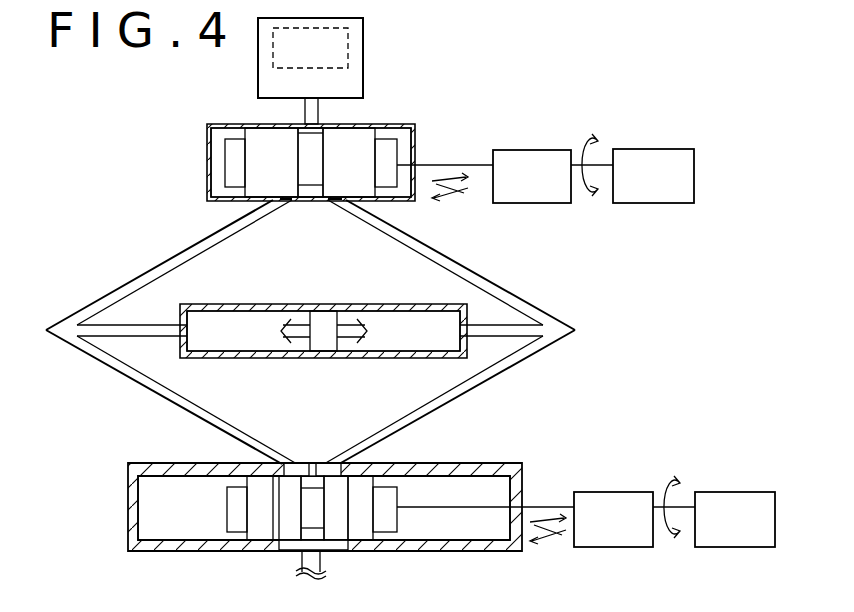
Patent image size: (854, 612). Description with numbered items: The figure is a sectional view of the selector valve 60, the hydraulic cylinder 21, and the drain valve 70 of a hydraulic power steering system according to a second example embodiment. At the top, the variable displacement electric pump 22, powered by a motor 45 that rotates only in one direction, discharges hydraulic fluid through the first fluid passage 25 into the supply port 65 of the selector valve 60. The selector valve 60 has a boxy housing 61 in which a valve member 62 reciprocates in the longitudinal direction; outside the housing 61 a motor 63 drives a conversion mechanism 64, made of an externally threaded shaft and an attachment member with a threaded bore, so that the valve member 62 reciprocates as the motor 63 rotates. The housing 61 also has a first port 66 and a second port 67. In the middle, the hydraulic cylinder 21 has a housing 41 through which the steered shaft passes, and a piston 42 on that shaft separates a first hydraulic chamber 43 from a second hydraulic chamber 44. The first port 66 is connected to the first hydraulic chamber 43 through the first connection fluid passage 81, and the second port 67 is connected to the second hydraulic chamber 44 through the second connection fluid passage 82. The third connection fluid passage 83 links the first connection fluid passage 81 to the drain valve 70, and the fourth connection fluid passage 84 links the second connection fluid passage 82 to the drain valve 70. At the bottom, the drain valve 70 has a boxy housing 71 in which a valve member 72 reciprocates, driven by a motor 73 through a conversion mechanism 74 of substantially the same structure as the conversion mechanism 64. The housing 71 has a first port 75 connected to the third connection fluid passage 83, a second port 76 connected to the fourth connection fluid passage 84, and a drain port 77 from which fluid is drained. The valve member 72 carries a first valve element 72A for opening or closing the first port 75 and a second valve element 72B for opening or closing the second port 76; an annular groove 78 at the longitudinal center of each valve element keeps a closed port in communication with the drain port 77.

The hydraulic cylinder 21 is at (245, 304).
The variable displacement electric pump 22 is at (363, 78).
The first fluid passage 25 is at (318, 112).
The housing 41 is at (355, 357).
The piston 42 is at (322, 351).
The first hydraulic chamber 43 is at (408, 351).
The second hydraulic chamber 44 is at (228, 351).
The motor 45 is at (348, 40).
The selector valve 60 is at (207, 134).
The housing 61 is at (207, 164).
The valve member 62 is at (252, 138).
The motor 63 is at (694, 175).
The conversion mechanism 64 is at (531, 150).
The supply port 65 is at (300, 127).
The first port 66 is at (334, 204).
The second port 67 is at (288, 205).
The drain valve 70 is at (128, 488).
The housing 71 is at (128, 532).
The valve member 72 is at (245, 540).
The first valve element 72A is at (372, 478).
The second valve element 72B is at (262, 482).
The motor 73 is at (775, 517).
The conversion mechanism 74 is at (615, 492).
The first port 75 is at (330, 463).
The second port 76 is at (290, 463).
The drain port 77 is at (315, 578).
The annular groove 78 is at (276, 528).
The first connection fluid passage 81 is at (518, 302).
The second connection fluid passage 82 is at (115, 297).
The third connection fluid passage 83 is at (518, 360).
The fourth connection fluid passage 84 is at (102, 360).